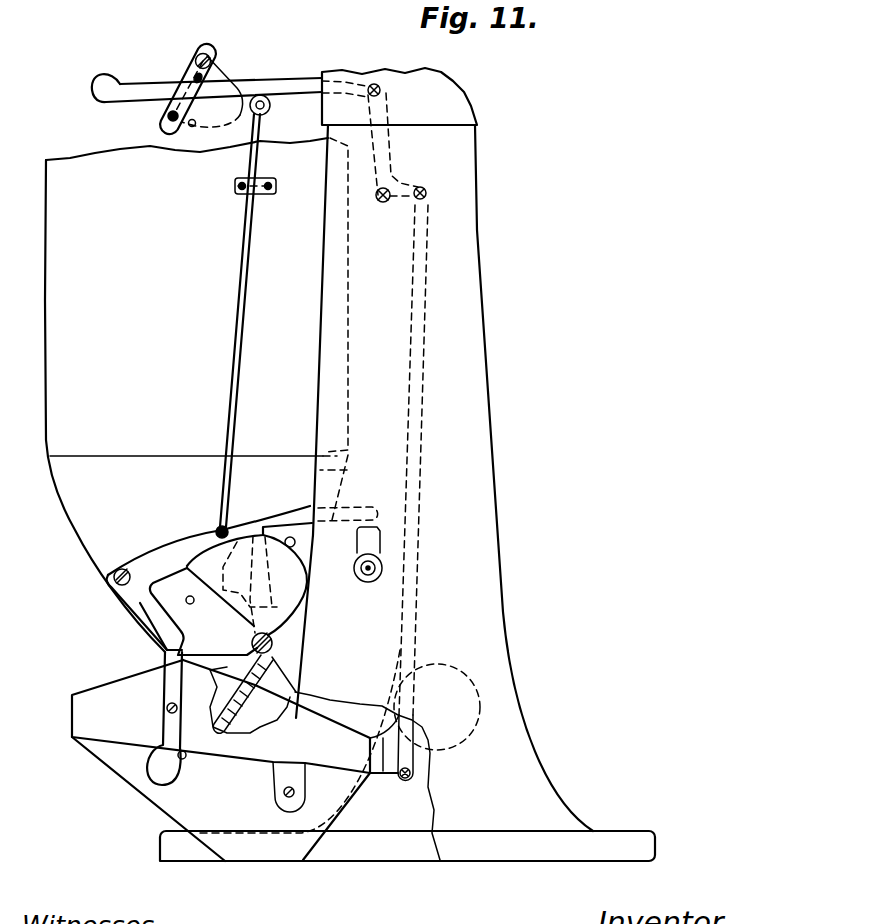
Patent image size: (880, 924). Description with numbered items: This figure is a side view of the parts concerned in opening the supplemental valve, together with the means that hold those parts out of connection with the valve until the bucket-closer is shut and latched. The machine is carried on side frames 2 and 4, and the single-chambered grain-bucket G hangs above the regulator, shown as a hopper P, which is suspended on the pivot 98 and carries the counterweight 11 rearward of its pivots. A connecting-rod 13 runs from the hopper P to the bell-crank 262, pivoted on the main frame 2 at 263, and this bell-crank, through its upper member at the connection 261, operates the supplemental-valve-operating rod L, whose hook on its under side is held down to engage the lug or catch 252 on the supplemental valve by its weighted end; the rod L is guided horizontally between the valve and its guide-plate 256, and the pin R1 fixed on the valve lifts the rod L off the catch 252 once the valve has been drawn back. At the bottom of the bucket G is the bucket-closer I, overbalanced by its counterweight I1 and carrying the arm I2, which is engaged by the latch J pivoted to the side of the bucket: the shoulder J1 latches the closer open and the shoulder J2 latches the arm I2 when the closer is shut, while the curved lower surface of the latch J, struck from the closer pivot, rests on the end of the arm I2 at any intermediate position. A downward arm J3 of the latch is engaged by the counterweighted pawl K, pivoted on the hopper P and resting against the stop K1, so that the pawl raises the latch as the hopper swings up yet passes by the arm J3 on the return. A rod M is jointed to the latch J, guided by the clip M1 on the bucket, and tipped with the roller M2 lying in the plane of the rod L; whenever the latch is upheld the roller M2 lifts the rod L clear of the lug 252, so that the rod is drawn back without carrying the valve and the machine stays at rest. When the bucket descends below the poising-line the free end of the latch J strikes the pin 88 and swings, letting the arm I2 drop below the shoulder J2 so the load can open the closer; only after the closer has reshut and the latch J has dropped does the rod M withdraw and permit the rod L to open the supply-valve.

The side frame 2 is at (503, 612).
The side frame 4 is at (292, 690).
The counterweight 11 is at (437, 707).
The connecting-rod 13 is at (423, 370).
The pin 88 is at (356, 554).
The pivot 98 is at (298, 792).
The engaging lug 252 is at (186, 110).
The guide-plate 256 is at (198, 80).
The pivot screw 261 is at (382, 91).
The bell-crank 262 is at (395, 154).
The pivot 263 is at (378, 206).
The grain-bucket G is at (196, 395).
The bucket-closer I is at (238, 707).
The counterweight I1 is at (249, 579).
The arm I2 is at (229, 622).
The latch J is at (208, 578).
The shoulder J1 is at (215, 540).
The shoulder J2 is at (277, 515).
The arm J3 is at (145, 622).
The pawl K is at (164, 720).
The stop K1 is at (186, 758).
The supplemental-valve-operating rod L is at (263, 82).
The rod M is at (249, 275).
The clip M1 is at (270, 186).
The roller M2 is at (273, 104).
The hopper P is at (83, 692).
The pin R1 is at (187, 122).